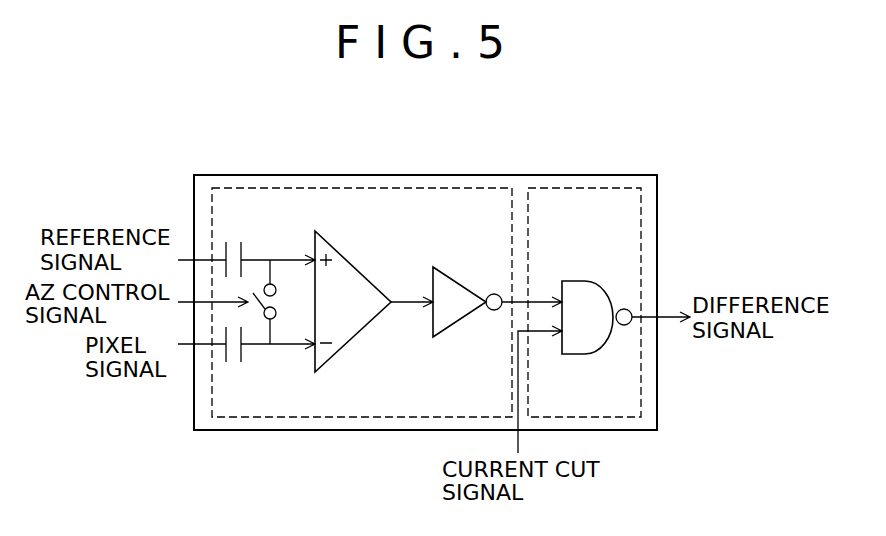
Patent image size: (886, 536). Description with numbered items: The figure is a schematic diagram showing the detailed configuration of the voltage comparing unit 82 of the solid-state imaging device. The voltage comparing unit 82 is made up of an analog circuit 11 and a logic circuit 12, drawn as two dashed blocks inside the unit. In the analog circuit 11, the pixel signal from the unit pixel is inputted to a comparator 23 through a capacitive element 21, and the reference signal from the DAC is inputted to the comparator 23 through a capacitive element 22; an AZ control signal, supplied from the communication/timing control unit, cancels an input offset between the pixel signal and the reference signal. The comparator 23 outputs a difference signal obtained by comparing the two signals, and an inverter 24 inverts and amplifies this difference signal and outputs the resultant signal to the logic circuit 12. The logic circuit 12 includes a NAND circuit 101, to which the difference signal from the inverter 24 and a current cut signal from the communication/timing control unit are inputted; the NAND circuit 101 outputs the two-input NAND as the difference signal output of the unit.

The analog circuit 11 is at (453, 188).
The logic circuit 12 is at (588, 188).
The capacitive element 21 is at (242, 356).
The capacitive element 22 is at (242, 248).
The comparator 23 is at (352, 340).
The inverter 24 is at (448, 330).
The voltage comparing unit 82 is at (318, 430).
The NAND circuit 101 is at (577, 355).